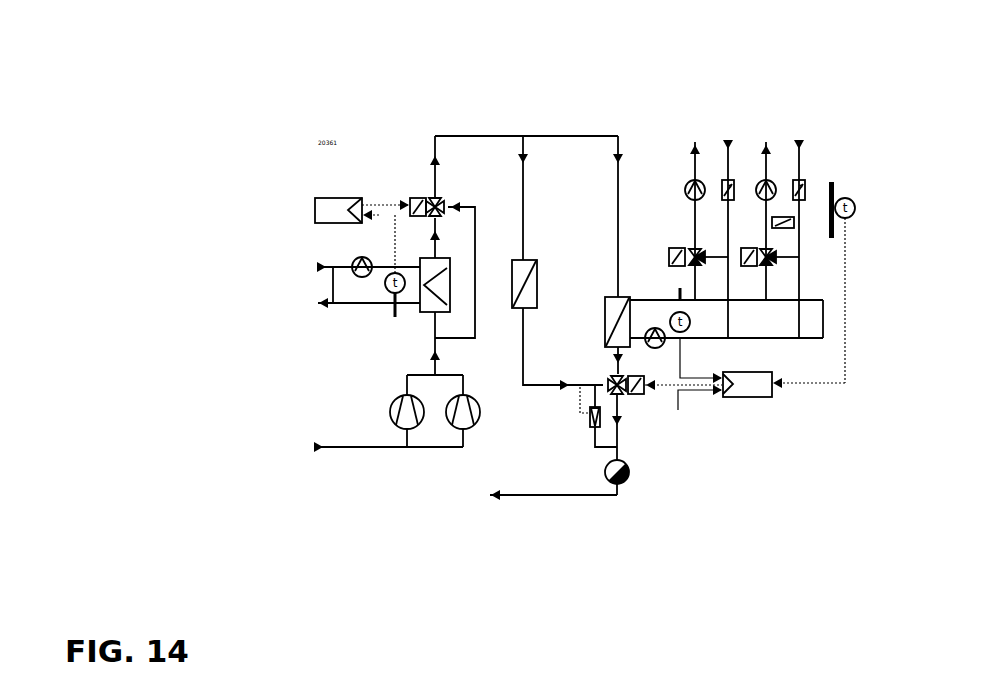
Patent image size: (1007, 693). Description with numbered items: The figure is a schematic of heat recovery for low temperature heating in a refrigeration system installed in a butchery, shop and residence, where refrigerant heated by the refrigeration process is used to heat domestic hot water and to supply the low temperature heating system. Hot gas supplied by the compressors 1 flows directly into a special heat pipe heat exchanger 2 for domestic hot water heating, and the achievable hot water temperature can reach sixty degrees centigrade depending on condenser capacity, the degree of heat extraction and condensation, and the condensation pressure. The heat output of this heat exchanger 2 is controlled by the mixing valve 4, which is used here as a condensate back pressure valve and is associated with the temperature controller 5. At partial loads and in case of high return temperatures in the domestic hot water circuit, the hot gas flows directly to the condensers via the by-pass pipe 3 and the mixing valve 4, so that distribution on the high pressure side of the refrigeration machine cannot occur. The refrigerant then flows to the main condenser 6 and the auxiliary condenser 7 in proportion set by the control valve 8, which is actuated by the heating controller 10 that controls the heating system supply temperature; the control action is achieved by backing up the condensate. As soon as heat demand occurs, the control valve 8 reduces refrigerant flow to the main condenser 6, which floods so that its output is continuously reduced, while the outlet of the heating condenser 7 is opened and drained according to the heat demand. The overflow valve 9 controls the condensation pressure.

The compressor 1 is at (397, 396).
The heat exchanger 2 is at (390, 277).
The by-pass pipe 3 is at (460, 270).
The mixing valve 4 is at (433, 200).
The temperature controller 5 is at (362, 204).
The main condenser 6 is at (557, 325).
The auxiliary condenser 7 is at (611, 335).
The control valve 8 is at (606, 438).
The overflow valve 9 is at (595, 416).
The heating controller 10 is at (725, 374).